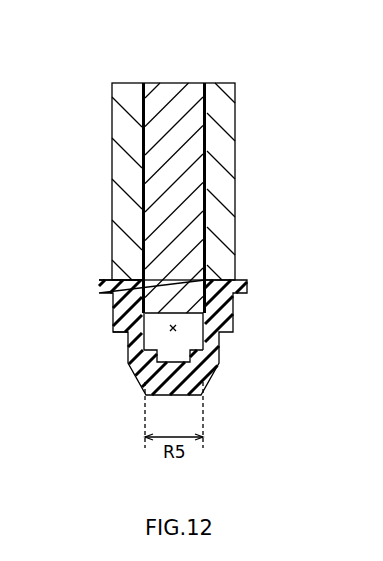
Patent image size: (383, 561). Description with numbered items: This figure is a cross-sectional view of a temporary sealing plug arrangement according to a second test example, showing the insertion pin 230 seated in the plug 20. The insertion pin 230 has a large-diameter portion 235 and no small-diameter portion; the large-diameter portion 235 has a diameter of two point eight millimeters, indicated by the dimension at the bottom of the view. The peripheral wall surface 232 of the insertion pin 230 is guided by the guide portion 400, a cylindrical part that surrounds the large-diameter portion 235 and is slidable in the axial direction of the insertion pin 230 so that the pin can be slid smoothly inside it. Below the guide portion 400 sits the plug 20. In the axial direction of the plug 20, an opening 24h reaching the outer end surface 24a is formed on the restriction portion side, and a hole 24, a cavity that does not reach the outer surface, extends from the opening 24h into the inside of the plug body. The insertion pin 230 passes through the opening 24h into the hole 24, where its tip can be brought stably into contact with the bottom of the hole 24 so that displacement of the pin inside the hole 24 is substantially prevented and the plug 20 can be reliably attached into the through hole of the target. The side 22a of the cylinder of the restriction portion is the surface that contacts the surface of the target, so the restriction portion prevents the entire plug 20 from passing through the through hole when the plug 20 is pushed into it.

The guide portion 400 is at (238, 113).
The insertion pin 230 is at (216, 169).
The large-diameter portion 235 is at (186, 81).
The peripheral wall surface 232 is at (143, 144).
The plug 20 is at (250, 283).
The opening 24h is at (206, 270).
The hole 24 is at (177, 328).
The end surface 24a is at (113, 278).
The side of the cylinder 22a is at (128, 332).